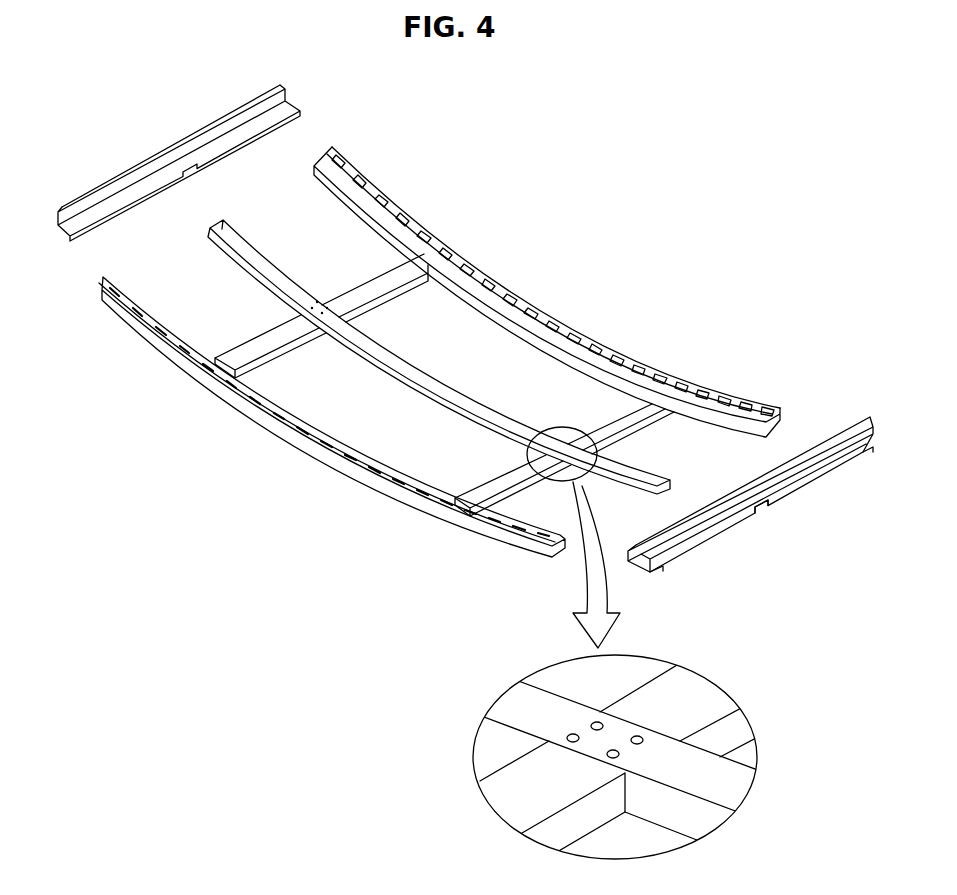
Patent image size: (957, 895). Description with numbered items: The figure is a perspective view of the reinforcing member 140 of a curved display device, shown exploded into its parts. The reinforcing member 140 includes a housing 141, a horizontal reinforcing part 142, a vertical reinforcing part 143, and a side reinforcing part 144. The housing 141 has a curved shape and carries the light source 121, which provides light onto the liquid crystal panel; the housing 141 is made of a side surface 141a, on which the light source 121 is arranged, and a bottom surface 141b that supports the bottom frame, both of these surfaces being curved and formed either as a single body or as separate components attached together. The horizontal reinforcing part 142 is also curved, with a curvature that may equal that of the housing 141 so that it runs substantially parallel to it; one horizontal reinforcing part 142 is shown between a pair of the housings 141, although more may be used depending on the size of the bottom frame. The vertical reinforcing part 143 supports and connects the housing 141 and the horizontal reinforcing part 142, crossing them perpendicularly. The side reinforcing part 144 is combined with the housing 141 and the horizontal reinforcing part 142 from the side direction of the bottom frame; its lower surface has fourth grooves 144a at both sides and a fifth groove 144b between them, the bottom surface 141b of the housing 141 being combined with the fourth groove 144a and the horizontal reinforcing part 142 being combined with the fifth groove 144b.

The reinforcing member 140 is at (446, 83).
The housing 141 is at (586, 222).
The side surface 141a is at (505, 291).
The bottom surface 141b is at (486, 270).
The light source 121 is at (650, 366).
The horizontal reinforcing part 142 is at (257, 257).
The vertical reinforcing part 143 is at (245, 348).
The side reinforcing part 144 is at (822, 468).
The fourth groove 144a is at (866, 456).
The fifth groove 144b is at (763, 508).